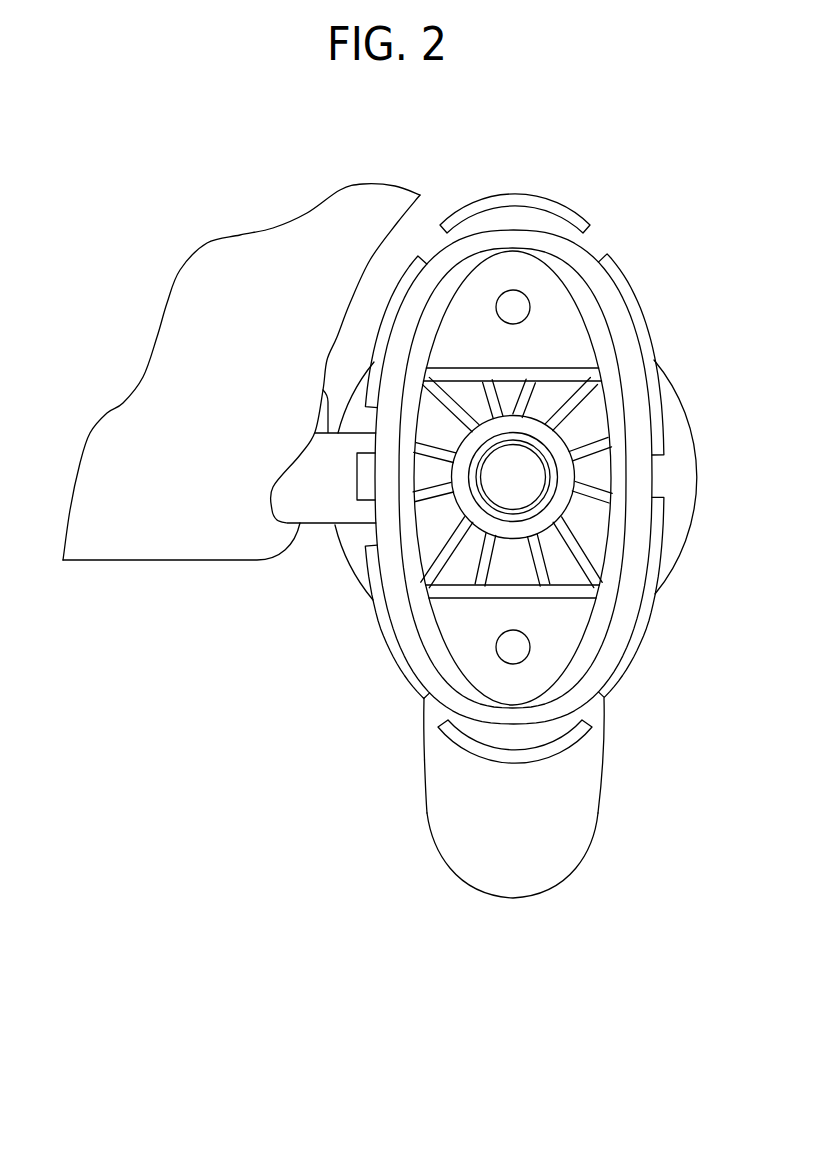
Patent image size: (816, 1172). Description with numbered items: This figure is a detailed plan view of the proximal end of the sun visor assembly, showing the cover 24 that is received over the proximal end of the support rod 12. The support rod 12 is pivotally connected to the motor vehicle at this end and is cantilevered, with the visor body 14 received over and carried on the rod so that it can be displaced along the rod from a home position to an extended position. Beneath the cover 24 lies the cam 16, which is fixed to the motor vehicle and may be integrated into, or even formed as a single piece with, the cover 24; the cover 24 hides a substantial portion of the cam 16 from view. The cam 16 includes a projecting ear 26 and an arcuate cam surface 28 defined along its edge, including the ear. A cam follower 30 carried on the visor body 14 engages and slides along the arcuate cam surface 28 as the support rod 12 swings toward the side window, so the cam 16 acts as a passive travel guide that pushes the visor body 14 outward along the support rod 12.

The support rod 12 is at (310, 502).
The visor body 14 is at (145, 527).
The cam 16 is at (568, 795).
The cover 24 is at (570, 347).
The projecting ear 26 is at (507, 898).
The arcuate cam surface 28 is at (423, 723).
The cam follower 30 is at (316, 548).